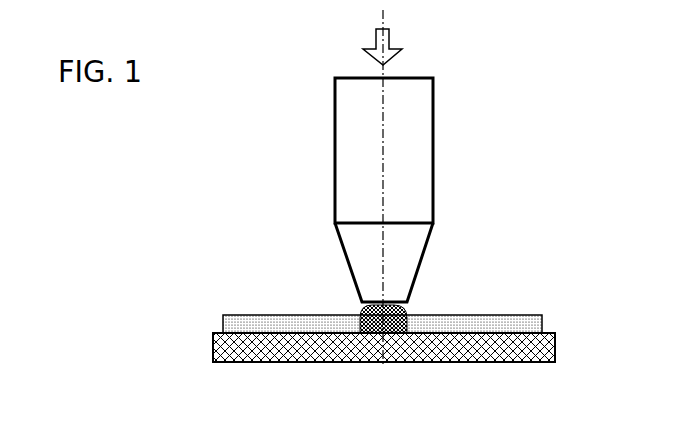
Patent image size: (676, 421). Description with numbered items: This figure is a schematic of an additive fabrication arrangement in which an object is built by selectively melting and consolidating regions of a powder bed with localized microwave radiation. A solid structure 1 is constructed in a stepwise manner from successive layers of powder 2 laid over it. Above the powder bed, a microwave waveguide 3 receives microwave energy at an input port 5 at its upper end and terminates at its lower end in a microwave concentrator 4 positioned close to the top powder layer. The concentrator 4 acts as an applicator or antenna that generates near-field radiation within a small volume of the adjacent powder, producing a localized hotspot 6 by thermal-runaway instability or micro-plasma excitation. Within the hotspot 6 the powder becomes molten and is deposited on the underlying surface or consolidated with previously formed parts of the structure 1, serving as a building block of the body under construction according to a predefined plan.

The solid structure 1 is at (318, 367).
The layers of powder 2 is at (277, 315).
The microwave waveguide 3 is at (334, 178).
The microwave concentrator 4 is at (344, 262).
The input port 5 is at (362, 35).
The localized hotspot 6 is at (405, 310).